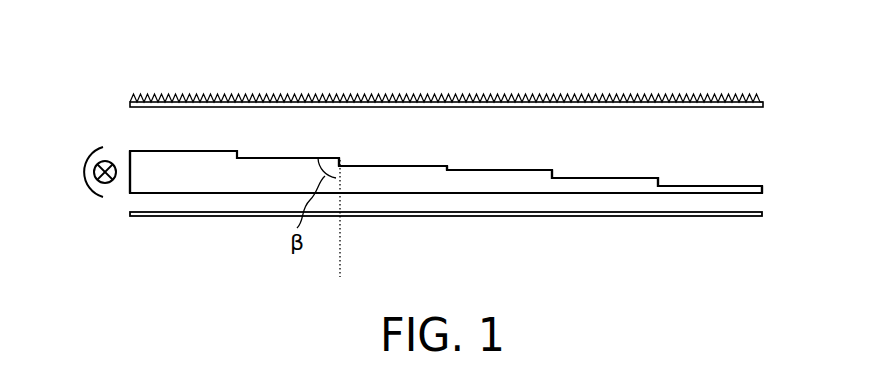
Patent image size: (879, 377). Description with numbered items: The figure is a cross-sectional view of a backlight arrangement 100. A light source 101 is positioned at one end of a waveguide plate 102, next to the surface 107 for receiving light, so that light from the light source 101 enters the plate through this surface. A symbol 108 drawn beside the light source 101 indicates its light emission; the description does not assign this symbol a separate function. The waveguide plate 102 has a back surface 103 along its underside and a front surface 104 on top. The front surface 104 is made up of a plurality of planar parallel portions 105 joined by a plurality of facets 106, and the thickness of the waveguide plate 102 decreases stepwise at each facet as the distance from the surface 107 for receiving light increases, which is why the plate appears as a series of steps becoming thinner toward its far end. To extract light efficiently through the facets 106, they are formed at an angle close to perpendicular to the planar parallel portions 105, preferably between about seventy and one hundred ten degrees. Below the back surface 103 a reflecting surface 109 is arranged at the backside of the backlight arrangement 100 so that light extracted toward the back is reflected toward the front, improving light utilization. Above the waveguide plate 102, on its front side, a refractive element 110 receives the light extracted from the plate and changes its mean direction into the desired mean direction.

The backlight arrangement 100 is at (776, 127).
The light source 101 is at (94, 172).
The waveguide plate 102 is at (218, 185).
The back surface 103 is at (762, 193).
The front surface 104 is at (568, 154).
The planar parallel portions 105 is at (174, 151).
The facets 106 is at (340, 158).
The surface for receiving light 107 is at (128, 191).
The light emission cone 108 is at (85, 166).
The reflecting surface 109 is at (181, 217).
The refractive element 110 is at (197, 78).